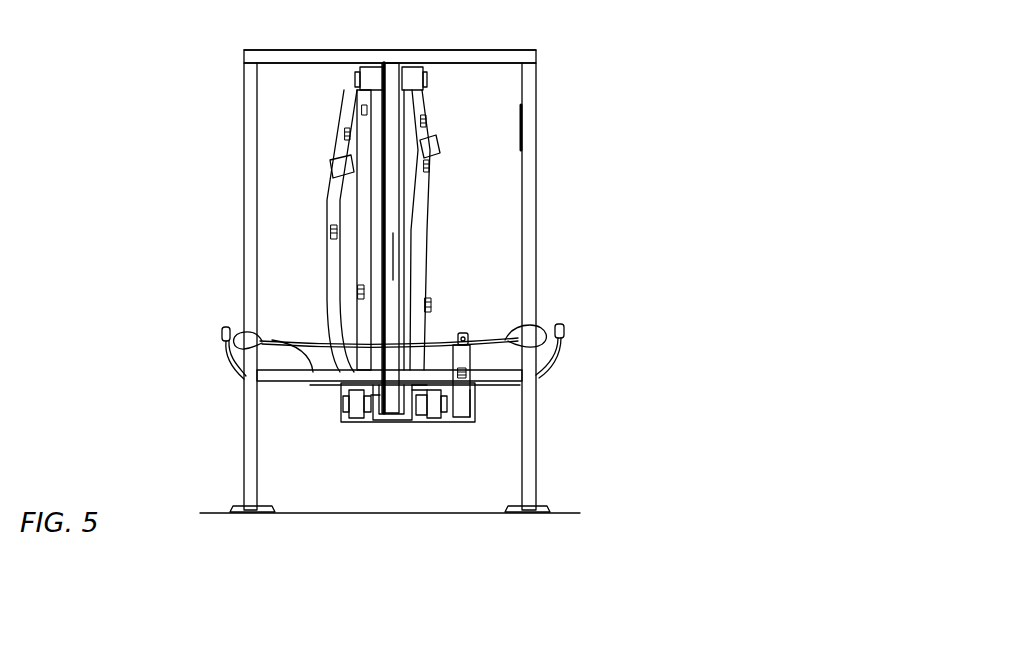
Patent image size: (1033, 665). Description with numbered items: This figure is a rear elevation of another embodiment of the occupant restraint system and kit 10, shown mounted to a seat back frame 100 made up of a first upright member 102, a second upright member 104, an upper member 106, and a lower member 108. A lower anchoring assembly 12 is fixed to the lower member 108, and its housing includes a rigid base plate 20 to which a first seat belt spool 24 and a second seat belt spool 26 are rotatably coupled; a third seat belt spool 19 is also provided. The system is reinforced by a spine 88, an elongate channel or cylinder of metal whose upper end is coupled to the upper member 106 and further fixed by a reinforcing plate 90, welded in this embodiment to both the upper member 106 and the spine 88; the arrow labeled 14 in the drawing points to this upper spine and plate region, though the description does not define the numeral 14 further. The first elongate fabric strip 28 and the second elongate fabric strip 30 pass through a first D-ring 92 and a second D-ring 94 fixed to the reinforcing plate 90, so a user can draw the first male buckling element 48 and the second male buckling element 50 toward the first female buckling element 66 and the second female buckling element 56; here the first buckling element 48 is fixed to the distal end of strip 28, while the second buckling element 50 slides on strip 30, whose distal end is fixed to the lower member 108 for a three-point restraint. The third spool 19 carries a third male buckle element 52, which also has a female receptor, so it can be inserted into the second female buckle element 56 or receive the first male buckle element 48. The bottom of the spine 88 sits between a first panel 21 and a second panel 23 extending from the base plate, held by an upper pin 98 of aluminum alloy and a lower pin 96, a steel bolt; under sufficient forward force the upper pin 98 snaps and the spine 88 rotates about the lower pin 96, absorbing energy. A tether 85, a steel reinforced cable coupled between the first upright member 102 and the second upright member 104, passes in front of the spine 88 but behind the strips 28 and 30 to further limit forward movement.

The occupant restraint system and kit 10 is at (390, 390).
The lower anchoring assembly 12 is at (322, 418).
The upright assembly 14 is at (440, 206).
The third seat belt spool 19 is at (473, 393).
The base plate 20 is at (345, 424).
The first panel 21 is at (417, 412).
The second panel 23 is at (383, 423).
The first seat belt spool 24 is at (435, 408).
The second seat belt spool 26 is at (362, 422).
The first elongate fabric strip 28 is at (458, 230).
The second elongate fabric strip 30 is at (320, 231).
The first male buckling element 48 is at (437, 148).
The second male buckling element 50 is at (332, 161).
The third male buckle element 52 is at (470, 353).
The second female buckling element 56 is at (566, 336).
The first female buckling element 66 is at (220, 336).
The tether 85 is at (500, 328).
The spine 88 is at (390, 72).
The reinforcing plate 90 is at (413, 67).
The first D-ring 92 is at (427, 83).
The second D-ring 94 is at (357, 86).
The lower pin 96 is at (413, 417).
The upper pin 98 is at (425, 413).
The seat back frame 100 is at (380, 256).
The first upright member 102 is at (548, 219).
The second upright member 104 is at (244, 283).
The upper member 106 is at (303, 50).
The lower member 108 is at (393, 337).